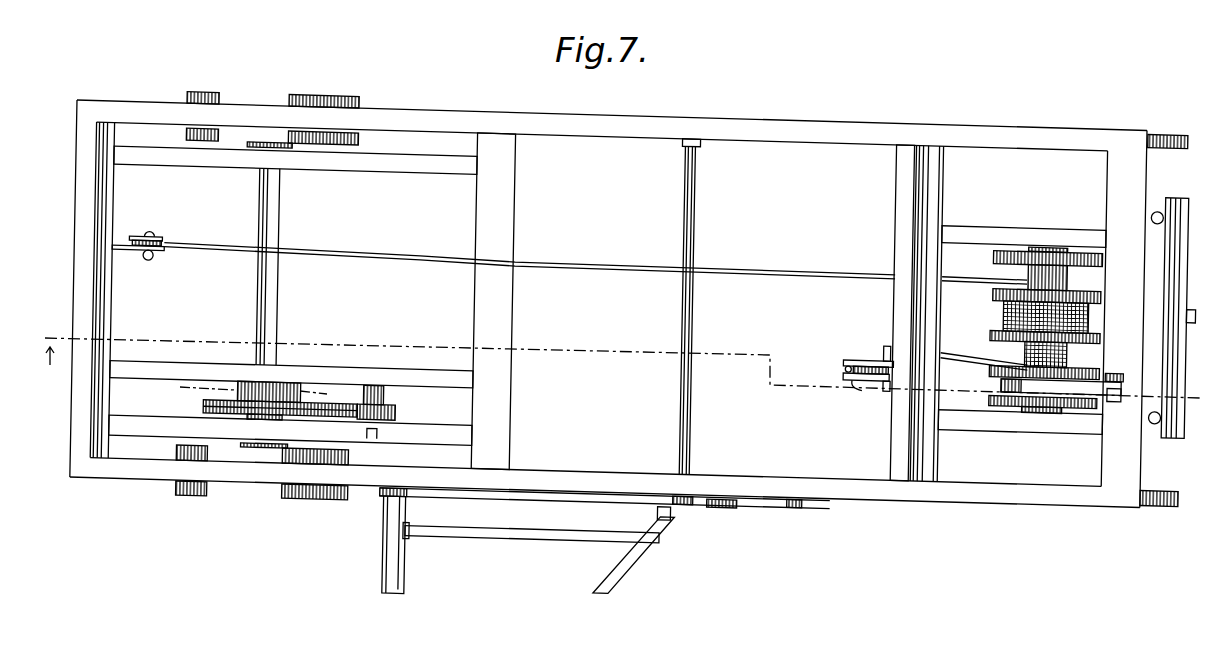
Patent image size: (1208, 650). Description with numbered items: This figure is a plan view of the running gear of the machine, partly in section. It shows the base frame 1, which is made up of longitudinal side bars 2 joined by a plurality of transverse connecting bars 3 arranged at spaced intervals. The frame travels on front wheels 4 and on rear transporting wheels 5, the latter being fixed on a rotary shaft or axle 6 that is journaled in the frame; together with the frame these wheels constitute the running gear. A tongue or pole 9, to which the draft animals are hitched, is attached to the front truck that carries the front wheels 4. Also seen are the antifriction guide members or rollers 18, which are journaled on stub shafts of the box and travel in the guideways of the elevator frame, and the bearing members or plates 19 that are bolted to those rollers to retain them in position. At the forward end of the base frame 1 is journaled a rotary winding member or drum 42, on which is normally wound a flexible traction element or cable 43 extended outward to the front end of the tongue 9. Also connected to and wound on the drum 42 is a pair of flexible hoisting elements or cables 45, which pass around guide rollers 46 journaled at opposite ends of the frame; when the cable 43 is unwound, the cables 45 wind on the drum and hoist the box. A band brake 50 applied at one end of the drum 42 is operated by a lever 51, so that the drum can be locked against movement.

The base frame 1 is at (607, 368).
The longitudinal side bars 2 is at (613, 119).
The transverse connecting bars 3 is at (73, 270).
The front wheels 4 is at (1162, 136).
The rear transporting wheels 5 is at (306, 97).
The rotary shaft or axle 6 is at (260, 296).
The tongue or pole 9 is at (1168, 262).
The antifriction guide members or rollers 18 is at (370, 374).
The bearing members or plates 19 is at (291, 400).
The rotary winding member or drum 42 is at (1040, 250).
The flexible traction element or cable 43 is at (1003, 318).
The flexible hoisting elements or cables 45 is at (812, 273).
The guide rollers 46 is at (146, 235).
The band brake 50 is at (1070, 388).
The lever 51 is at (1068, 370).